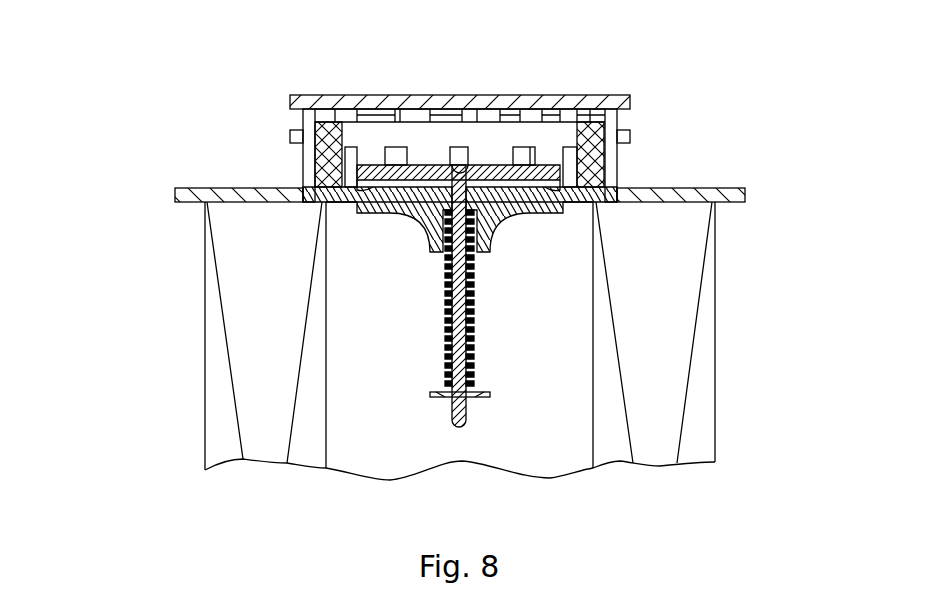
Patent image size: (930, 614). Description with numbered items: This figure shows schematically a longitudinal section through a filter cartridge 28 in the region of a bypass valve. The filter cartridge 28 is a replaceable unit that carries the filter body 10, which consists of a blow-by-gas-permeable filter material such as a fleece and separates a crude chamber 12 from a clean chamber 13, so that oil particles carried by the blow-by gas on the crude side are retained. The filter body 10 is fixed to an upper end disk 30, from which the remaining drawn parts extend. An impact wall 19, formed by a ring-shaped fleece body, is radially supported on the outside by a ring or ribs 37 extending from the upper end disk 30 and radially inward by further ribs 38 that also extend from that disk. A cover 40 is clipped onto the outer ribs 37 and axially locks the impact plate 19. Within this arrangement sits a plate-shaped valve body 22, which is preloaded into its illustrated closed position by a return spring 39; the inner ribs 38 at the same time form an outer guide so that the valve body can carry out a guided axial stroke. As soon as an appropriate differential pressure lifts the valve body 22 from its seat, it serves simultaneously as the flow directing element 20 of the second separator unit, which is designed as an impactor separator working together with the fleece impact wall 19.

The filter cartridge 28 is at (173, 121).
The impact wall 19 is at (330, 140).
The outer ribs 37 is at (420, 108).
The flow directing element 20 is at (498, 168).
The valve body 22 is at (460, 156).
The inner ribs 38 is at (522, 160).
The cover 40 is at (563, 160).
The upper end disk 30 is at (727, 192).
The filter body 10 is at (703, 327).
The crude chamber 12 is at (364, 366).
The clean chamber 13 is at (140, 362).
The return spring 39 is at (472, 345).